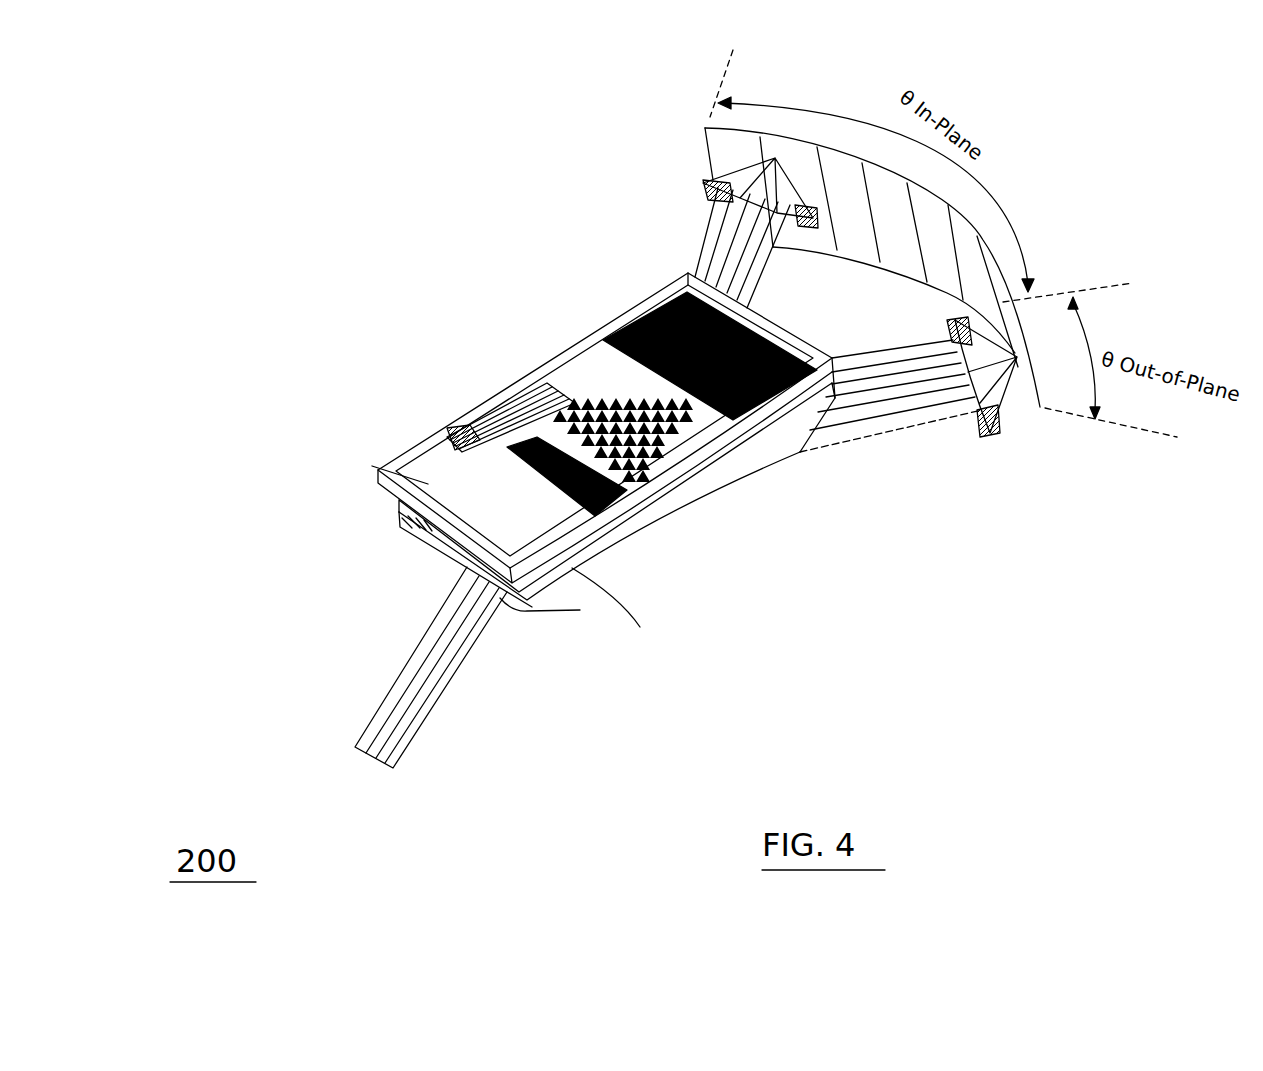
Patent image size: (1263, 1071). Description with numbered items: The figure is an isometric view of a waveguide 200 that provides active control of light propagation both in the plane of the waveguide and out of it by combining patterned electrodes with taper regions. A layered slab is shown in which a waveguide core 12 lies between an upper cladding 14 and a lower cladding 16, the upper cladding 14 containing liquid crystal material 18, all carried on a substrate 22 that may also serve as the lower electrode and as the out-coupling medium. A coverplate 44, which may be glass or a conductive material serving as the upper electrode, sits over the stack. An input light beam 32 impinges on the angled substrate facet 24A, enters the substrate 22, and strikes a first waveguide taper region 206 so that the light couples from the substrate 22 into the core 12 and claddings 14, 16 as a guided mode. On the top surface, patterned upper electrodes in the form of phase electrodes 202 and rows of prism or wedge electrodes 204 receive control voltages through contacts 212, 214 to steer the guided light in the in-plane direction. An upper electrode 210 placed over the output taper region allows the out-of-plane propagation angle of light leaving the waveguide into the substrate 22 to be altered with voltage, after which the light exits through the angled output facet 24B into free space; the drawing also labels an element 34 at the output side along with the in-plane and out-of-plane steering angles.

The waveguide 200 is at (763, 435).
The waveguide core 12 is at (632, 520).
The upper cladding 14 is at (400, 513).
The lower cladding 16 is at (670, 497).
The liquid crystal material 18 is at (400, 523).
The substrate 22 is at (760, 477).
The angled substrate facet 24A is at (557, 612).
The angled output facet 24B is at (803, 453).
The input light beam 32 is at (398, 675).
The second arm 34 is at (787, 240).
The coverplate 44 is at (428, 487).
The phase electrodes 202 is at (562, 475).
The prism electrodes 204 is at (613, 407).
The first waveguide taper region 206 is at (640, 627).
The upper electrode 210 is at (668, 292).
The contact 212 is at (468, 432).
The contact 214 is at (517, 390).